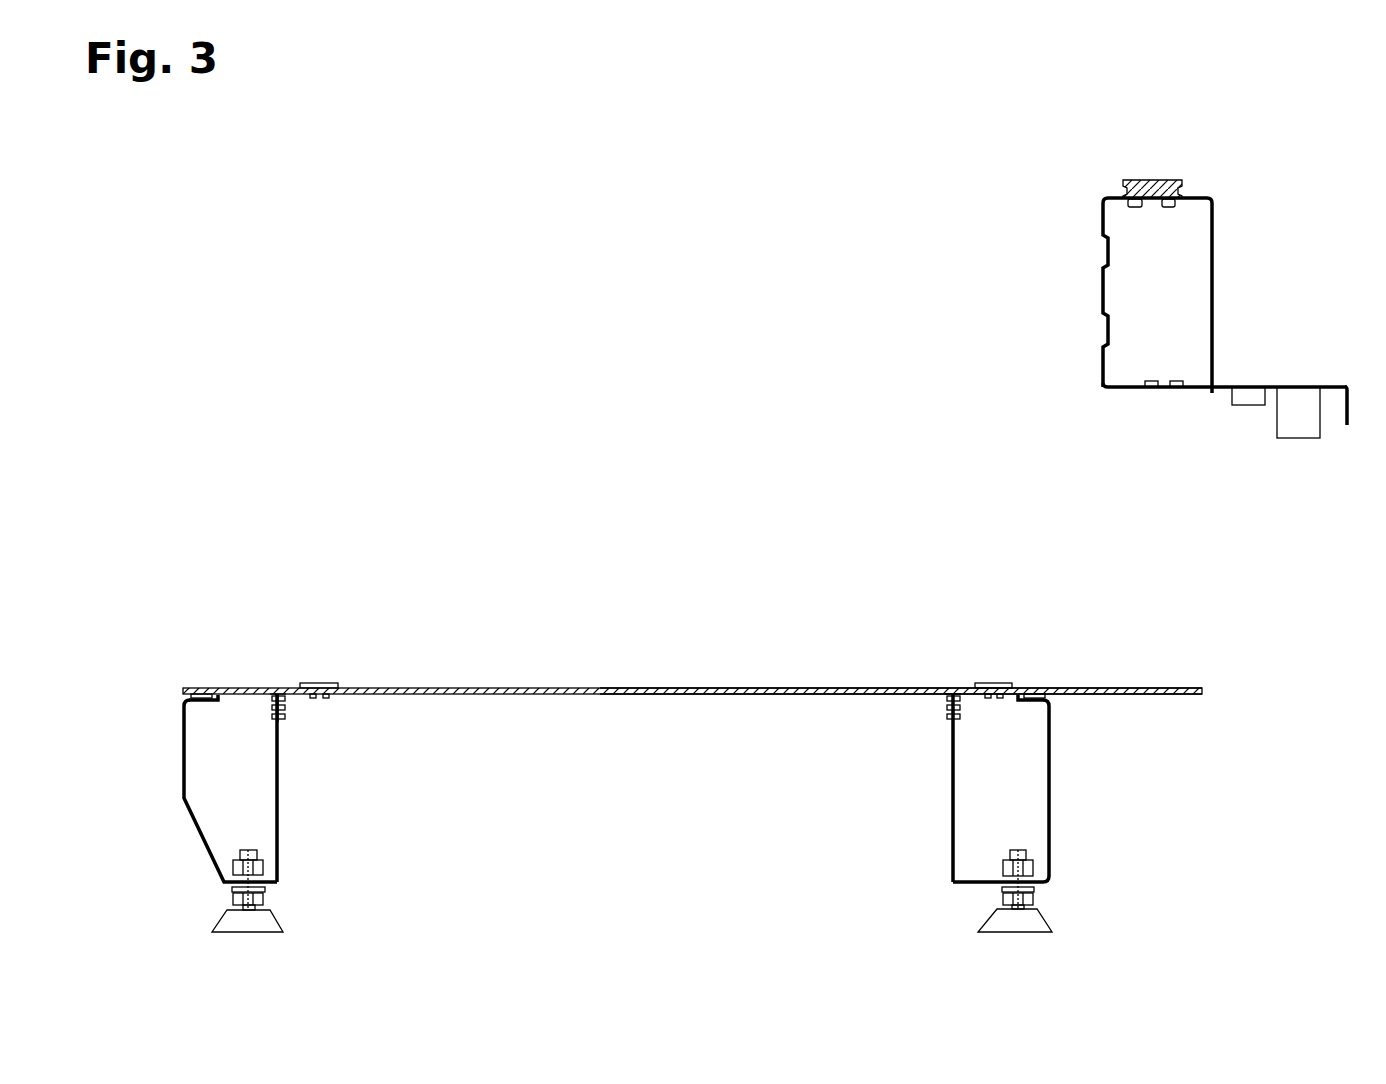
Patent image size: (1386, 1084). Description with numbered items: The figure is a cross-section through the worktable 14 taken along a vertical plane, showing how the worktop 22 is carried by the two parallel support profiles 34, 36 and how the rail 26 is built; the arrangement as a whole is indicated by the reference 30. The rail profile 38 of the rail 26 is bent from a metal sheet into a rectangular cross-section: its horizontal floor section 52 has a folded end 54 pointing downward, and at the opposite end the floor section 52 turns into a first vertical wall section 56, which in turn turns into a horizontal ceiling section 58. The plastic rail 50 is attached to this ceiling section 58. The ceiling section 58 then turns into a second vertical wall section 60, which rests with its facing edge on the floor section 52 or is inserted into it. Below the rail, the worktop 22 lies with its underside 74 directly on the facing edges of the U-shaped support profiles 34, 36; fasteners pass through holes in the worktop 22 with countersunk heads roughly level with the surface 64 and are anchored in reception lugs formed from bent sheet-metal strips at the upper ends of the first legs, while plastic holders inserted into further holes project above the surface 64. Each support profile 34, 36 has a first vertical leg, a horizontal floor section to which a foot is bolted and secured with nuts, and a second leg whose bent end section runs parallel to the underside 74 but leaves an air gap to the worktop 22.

The worktable 14 is at (671, 316).
The worktop 22 is at (602, 687).
The rail 26 is at (1056, 154).
The mounting arrangement 30 is at (586, 378).
The support profile 34 is at (193, 878).
The support profile 36 is at (916, 878).
The rail profile 38 is at (1075, 253).
The plastic rail 50 is at (1152, 190).
The floor section 52 is at (1223, 392).
The folded end 54 is at (1347, 412).
The first vertical wall section 56 is at (1103, 293).
The ceiling section 58 is at (1193, 197).
The second vertical wall section 60 is at (1213, 293).
The surface 64 is at (703, 687).
The underside 74 is at (668, 697).